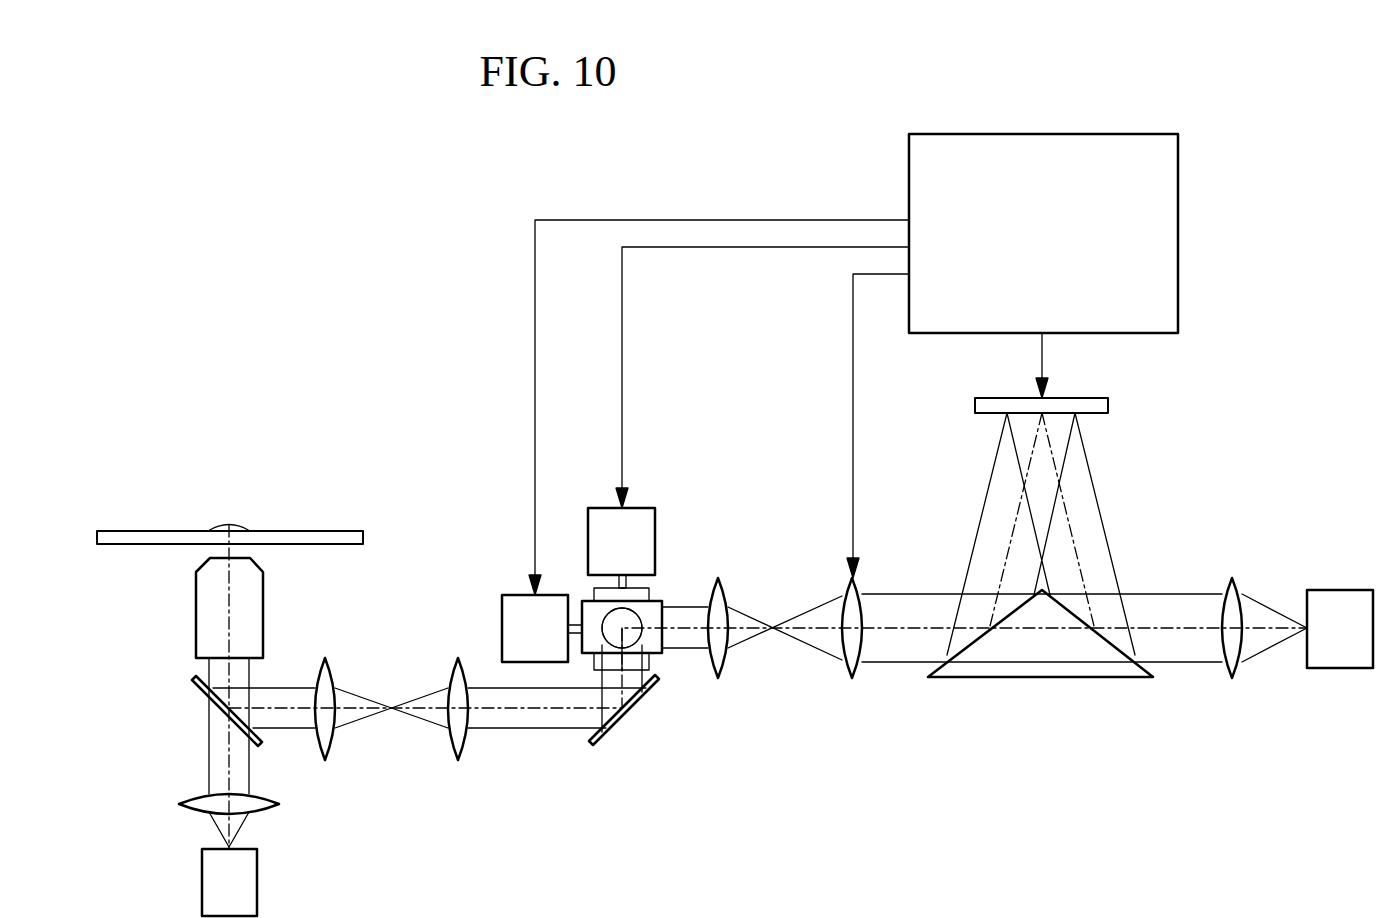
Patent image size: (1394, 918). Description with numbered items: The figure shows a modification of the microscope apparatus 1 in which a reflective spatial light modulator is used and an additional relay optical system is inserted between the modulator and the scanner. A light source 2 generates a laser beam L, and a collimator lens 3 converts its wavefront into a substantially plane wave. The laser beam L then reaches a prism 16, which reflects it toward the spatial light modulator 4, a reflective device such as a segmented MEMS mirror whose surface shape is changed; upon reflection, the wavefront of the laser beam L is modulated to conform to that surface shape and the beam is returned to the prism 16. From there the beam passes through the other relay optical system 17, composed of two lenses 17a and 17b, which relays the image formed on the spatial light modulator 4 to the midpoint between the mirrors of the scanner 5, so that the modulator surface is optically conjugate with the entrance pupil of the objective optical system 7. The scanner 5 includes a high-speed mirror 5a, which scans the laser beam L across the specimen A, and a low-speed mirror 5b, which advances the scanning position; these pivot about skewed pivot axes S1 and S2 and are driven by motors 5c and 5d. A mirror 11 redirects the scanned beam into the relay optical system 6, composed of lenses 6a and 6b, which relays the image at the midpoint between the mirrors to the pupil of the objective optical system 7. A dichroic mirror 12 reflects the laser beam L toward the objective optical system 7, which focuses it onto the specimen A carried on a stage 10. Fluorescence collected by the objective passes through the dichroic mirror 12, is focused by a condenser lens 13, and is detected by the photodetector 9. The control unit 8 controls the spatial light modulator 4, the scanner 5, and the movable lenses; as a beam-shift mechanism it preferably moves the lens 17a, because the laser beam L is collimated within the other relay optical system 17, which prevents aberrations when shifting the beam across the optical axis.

The microscope apparatus 1 is at (232, 362).
The light source 2 is at (1337, 670).
The collimator lens 3 is at (1232, 680).
The spatial light modulator 4 is at (1110, 403).
The scanner 5 is at (450, 548).
The mirror 5a is at (661, 668).
The mirror 5b is at (585, 655).
The motor 5c is at (638, 506).
The motor 5d is at (510, 593).
The relay optical system 6 is at (389, 716).
The lens 6a is at (458, 760).
The lens 6b is at (323, 760).
The objective optical system 7 is at (263, 592).
The control unit 8 is at (1042, 133).
The photodetector 9 is at (202, 882).
The stage 10 is at (299, 530).
The mirror 11 is at (610, 730).
The dichroic mirror 12 is at (195, 692).
The condenser lens 13 is at (180, 804).
The prism 16 is at (1040, 678).
The other relay optical system 17 is at (822, 644).
The lens 17a is at (862, 585).
The lens 17b is at (725, 580).
The specimen A is at (229, 525).
The laser beam L is at (1172, 594).
The pivot axis S1 is at (627, 581).
The pivot axis S2 is at (574, 623).